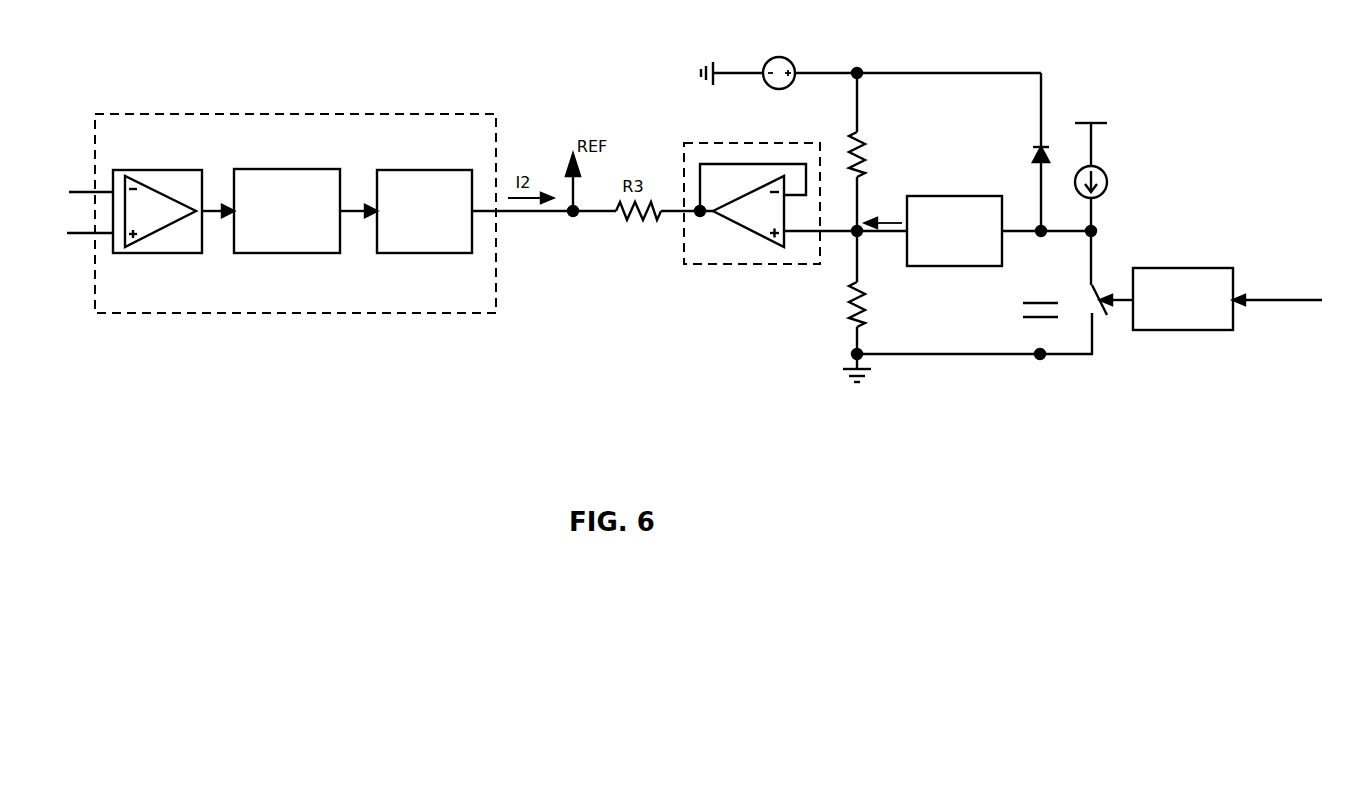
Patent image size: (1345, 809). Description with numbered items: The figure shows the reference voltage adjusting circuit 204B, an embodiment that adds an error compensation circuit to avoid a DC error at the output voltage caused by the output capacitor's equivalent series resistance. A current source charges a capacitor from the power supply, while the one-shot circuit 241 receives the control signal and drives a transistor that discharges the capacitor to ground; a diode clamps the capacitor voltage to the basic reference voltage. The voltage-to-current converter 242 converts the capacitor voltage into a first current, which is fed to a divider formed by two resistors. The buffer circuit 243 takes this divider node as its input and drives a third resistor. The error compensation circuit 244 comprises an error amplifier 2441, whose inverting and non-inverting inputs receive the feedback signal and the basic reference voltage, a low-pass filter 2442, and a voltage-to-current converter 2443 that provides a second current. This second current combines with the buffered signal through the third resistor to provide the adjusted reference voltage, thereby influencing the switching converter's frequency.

The reference voltage adjusting circuit 204B is at (1011, 198).
The one-shot circuit 241 is at (1165, 331).
The voltage-to-current converter 242 is at (940, 242).
The buffer circuit 243 is at (738, 265).
The error compensation circuit 244 is at (266, 228).
The error amplifier 2441 is at (173, 254).
The low-pass filter 2442 is at (292, 254).
The voltage-to-current converter 2443 is at (444, 222).